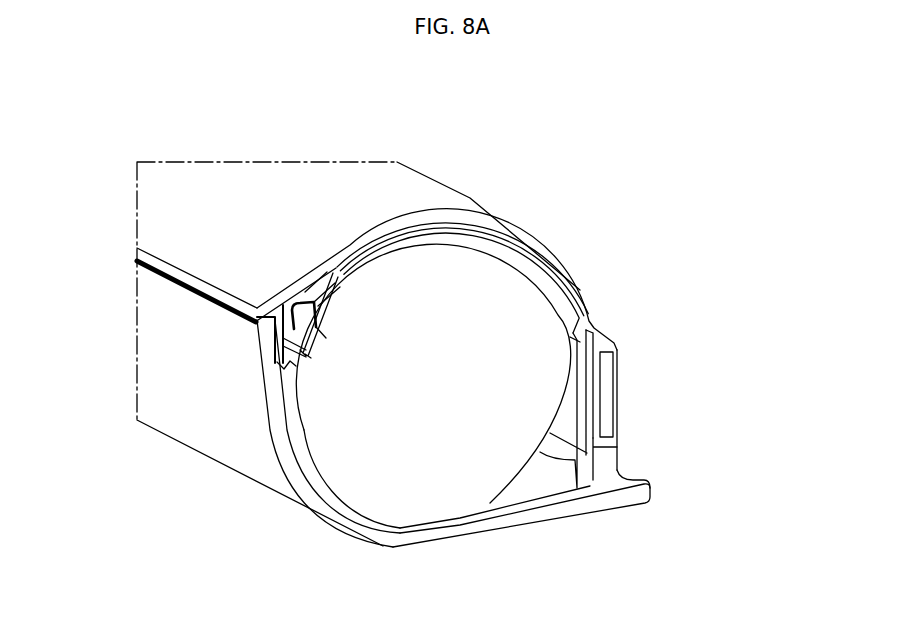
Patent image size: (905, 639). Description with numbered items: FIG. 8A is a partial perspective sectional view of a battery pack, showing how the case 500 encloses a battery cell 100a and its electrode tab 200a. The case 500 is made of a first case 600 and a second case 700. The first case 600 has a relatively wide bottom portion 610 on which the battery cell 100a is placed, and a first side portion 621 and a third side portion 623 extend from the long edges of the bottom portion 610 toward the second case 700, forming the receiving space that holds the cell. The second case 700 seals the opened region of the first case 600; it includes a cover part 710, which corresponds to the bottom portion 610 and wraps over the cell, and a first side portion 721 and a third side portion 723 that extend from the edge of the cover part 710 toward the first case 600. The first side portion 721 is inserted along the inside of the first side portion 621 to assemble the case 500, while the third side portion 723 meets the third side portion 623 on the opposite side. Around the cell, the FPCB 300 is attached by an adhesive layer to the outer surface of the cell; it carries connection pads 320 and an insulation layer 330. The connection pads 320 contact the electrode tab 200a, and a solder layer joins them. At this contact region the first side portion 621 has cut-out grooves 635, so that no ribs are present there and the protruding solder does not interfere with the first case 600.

The battery cell 100a is at (433, 453).
The housing 200a is at (291, 297).
The FPCB 300 is at (530, 257).
The connection pads 320 is at (283, 340).
The insulation layer 330 is at (334, 276).
The case 500 is at (460, 335).
The first case 600 is at (425, 451).
The bottom portion 610 is at (560, 512).
The first side portion 621 is at (287, 447).
The third side portion 623 is at (610, 452).
The cut-out grooves 635 is at (281, 362).
The second case 700 is at (425, 279).
The cover part 710 is at (481, 221).
The first side portion 721 is at (277, 322).
The third side portion 723 is at (647, 400).